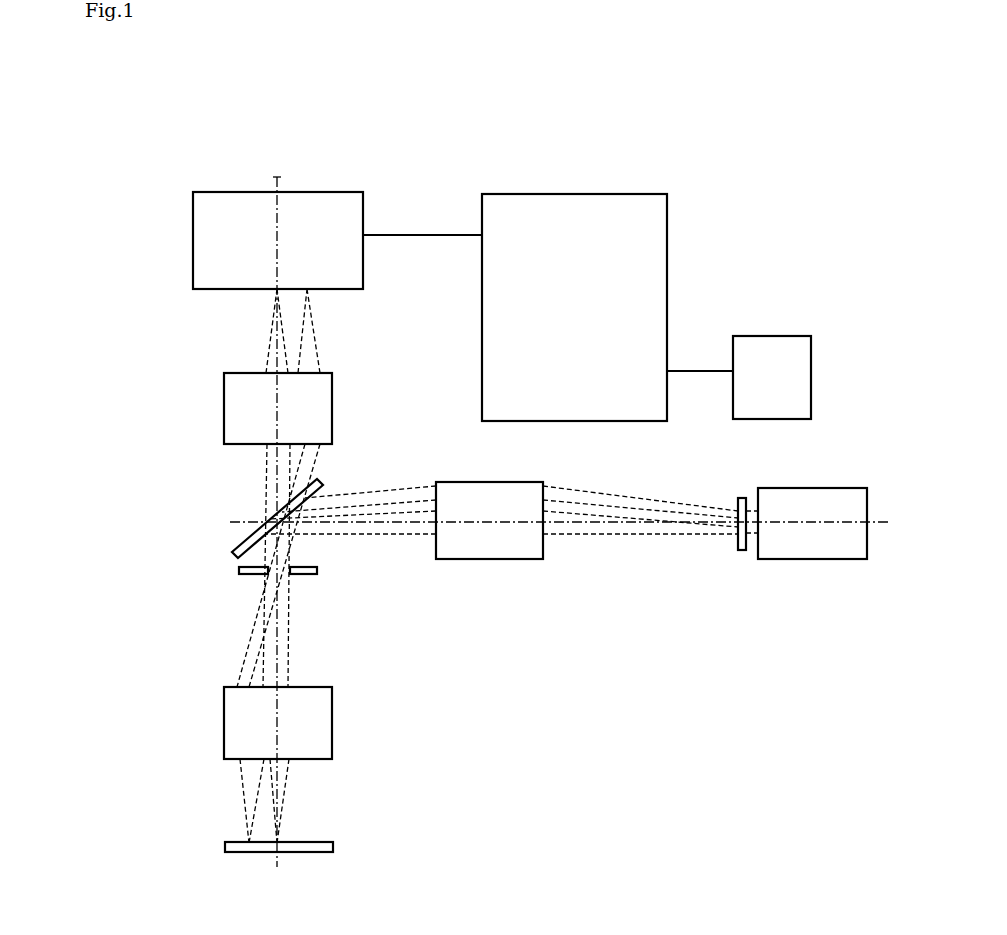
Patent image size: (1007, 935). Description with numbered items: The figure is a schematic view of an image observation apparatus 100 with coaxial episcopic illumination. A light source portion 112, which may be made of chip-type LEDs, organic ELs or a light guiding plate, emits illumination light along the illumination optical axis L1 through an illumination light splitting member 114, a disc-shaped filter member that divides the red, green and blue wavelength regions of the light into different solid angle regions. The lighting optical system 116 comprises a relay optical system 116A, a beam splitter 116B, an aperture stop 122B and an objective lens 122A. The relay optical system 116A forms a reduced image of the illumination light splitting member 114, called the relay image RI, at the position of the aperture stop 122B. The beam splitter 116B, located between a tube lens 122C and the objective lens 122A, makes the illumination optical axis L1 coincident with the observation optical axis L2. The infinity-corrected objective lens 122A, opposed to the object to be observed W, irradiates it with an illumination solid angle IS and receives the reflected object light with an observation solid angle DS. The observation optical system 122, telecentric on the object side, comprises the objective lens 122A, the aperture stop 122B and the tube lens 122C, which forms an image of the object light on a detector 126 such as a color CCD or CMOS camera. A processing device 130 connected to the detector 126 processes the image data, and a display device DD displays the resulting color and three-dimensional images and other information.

The image observation apparatus 100 is at (458, 82).
The detector 126 is at (312, 212).
The processing device 130 is at (574, 307).
The display device DD is at (772, 377).
The observation optical system 122 is at (183, 380).
The tube lens 122C is at (322, 398).
The aperture stop 122B is at (302, 572).
The objective lens 122A is at (315, 727).
The lighting optical system 116 is at (553, 627).
The relay optical system 116A is at (517, 493).
The beam splitter 116B is at (307, 497).
The illumination light splitting member 114 is at (741, 550).
The light source portion 112 is at (795, 546).
The illumination optical axis L1 is at (875, 524).
The observation optical axis L2 is at (277, 183).
The relay image RI is at (270, 575).
The illumination solid angle IS is at (237, 773).
The observation solid angle DS is at (295, 777).
The object to be observed W is at (302, 850).